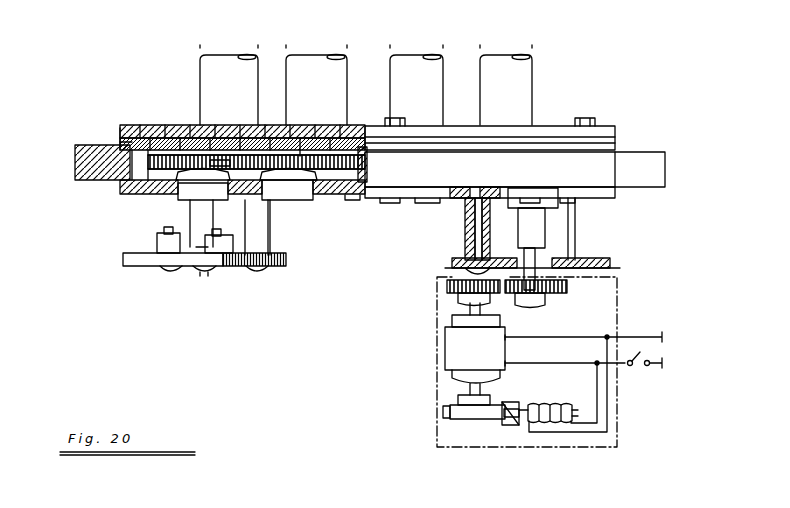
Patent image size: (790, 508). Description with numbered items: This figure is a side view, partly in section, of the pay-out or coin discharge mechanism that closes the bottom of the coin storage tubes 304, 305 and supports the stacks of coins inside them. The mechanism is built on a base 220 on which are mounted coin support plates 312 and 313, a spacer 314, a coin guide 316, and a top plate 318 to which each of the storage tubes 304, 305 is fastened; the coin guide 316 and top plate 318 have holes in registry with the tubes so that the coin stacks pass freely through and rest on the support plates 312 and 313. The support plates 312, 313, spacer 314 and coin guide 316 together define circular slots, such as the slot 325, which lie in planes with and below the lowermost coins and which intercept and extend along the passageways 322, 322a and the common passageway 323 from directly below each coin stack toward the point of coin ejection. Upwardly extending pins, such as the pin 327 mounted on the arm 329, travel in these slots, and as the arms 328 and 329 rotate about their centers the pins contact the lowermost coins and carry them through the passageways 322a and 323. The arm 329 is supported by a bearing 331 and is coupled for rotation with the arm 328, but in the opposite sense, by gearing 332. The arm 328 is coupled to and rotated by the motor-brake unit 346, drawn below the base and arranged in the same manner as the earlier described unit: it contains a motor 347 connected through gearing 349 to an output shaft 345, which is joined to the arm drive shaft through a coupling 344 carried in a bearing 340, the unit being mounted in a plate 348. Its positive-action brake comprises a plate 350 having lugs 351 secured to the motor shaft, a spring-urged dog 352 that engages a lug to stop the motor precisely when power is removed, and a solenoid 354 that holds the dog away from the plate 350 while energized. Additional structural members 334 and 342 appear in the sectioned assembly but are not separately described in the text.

The base 220 is at (75, 158).
The storage tube 304 is at (332, 101).
The storage tube 305 is at (232, 92).
The coin support plate 312 is at (165, 125).
The coin support plate 313 is at (335, 195).
The spacer 314 is at (120, 142).
The coin guide 316 is at (120, 130).
The top plate 318 is at (125, 125).
The passageway 322 is at (236, 158).
The passageway 322a is at (242, 162).
The common passageway 323 is at (242, 182).
The slot 325 is at (378, 140).
The pin 327 is at (233, 150).
The arm 328 is at (164, 183).
The arm 329 is at (302, 150).
The bearing 331 is at (279, 217).
The gearing 332 is at (143, 183).
The post 334 is at (356, 147).
The housing 340 is at (556, 173).
The bracket 342 is at (358, 195).
The cylinder 344 is at (195, 217).
The rod 345 is at (535, 262).
The motor brake unit 346 is at (619, 292).
The motor 347 is at (453, 348).
The plate 348 is at (608, 270).
The gear 349 is at (447, 286).
The shaft 350 is at (476, 418).
The end cap 351 is at (444, 411).
The block 352 is at (511, 425).
The coil 354 is at (550, 404).